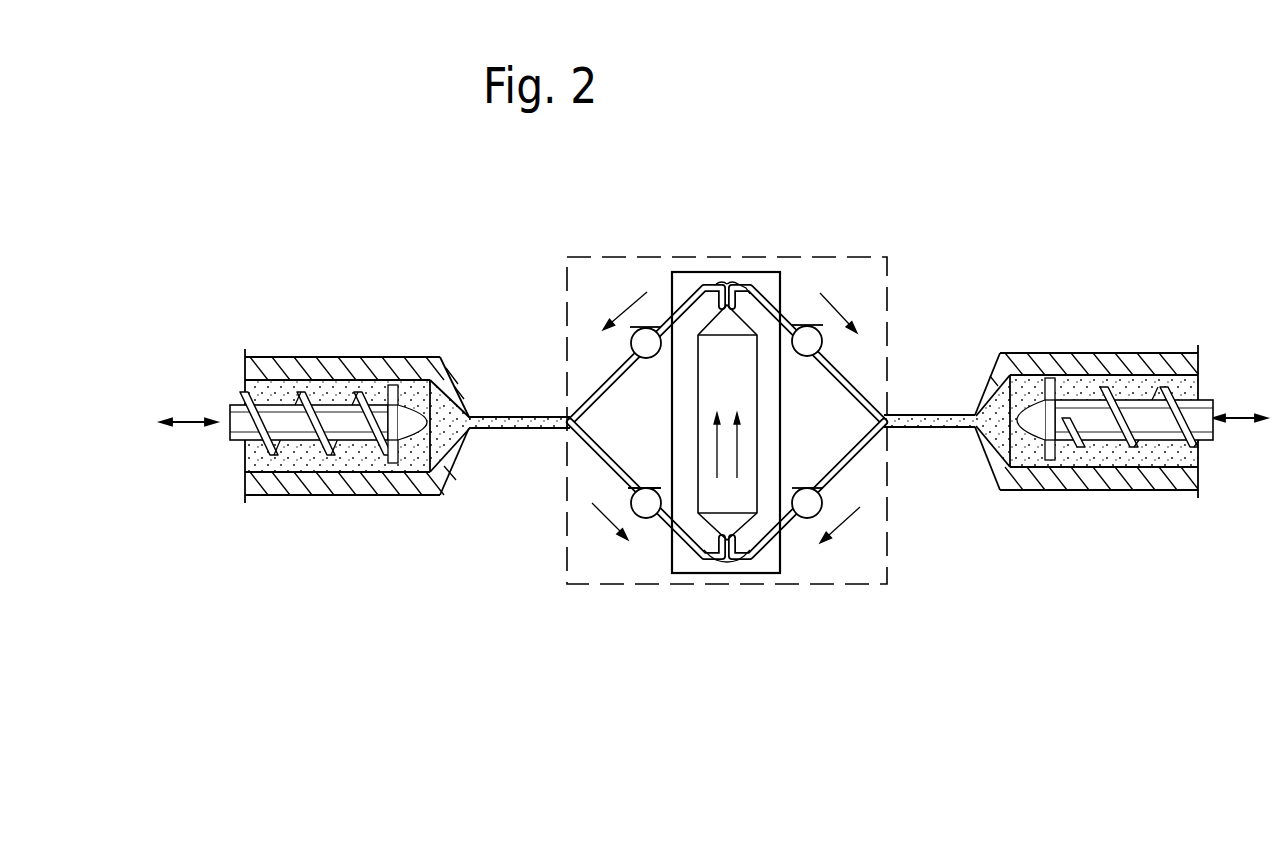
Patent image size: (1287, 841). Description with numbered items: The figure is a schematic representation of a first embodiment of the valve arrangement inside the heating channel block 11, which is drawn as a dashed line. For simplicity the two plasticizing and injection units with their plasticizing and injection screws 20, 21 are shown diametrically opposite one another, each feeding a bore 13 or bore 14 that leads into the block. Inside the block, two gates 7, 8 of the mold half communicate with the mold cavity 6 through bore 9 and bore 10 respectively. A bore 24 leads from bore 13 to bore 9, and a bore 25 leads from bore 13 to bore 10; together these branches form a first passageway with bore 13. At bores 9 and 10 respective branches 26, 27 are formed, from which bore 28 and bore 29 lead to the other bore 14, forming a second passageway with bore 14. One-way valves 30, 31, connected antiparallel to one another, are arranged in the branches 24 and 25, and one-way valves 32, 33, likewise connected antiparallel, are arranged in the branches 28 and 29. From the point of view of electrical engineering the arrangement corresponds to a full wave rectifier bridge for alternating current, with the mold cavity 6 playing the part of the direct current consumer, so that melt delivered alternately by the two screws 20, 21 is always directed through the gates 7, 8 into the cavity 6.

The cavity 6 is at (748, 494).
The gate 7 is at (744, 281).
The gate 8 is at (705, 568).
The bore 9 is at (729, 287).
The bore 10 is at (726, 568).
The heating channel block 11 is at (888, 262).
The bore 13 is at (935, 436).
The bore 14 is at (520, 435).
The plasticizing and injection screw 20 is at (372, 392).
The plasticizing and injection screw 21 is at (1165, 405).
The bore 24 is at (855, 382).
The bore 25 is at (855, 465).
The branch 26 is at (720, 287).
The branch 27 is at (738, 572).
The bore 28 is at (600, 378).
The bore 29 is at (600, 466).
The one-way valve 30 is at (808, 327).
The one-way valve 31 is at (806, 512).
The one-way valve 32 is at (638, 518).
The one-way valve 33 is at (640, 330).